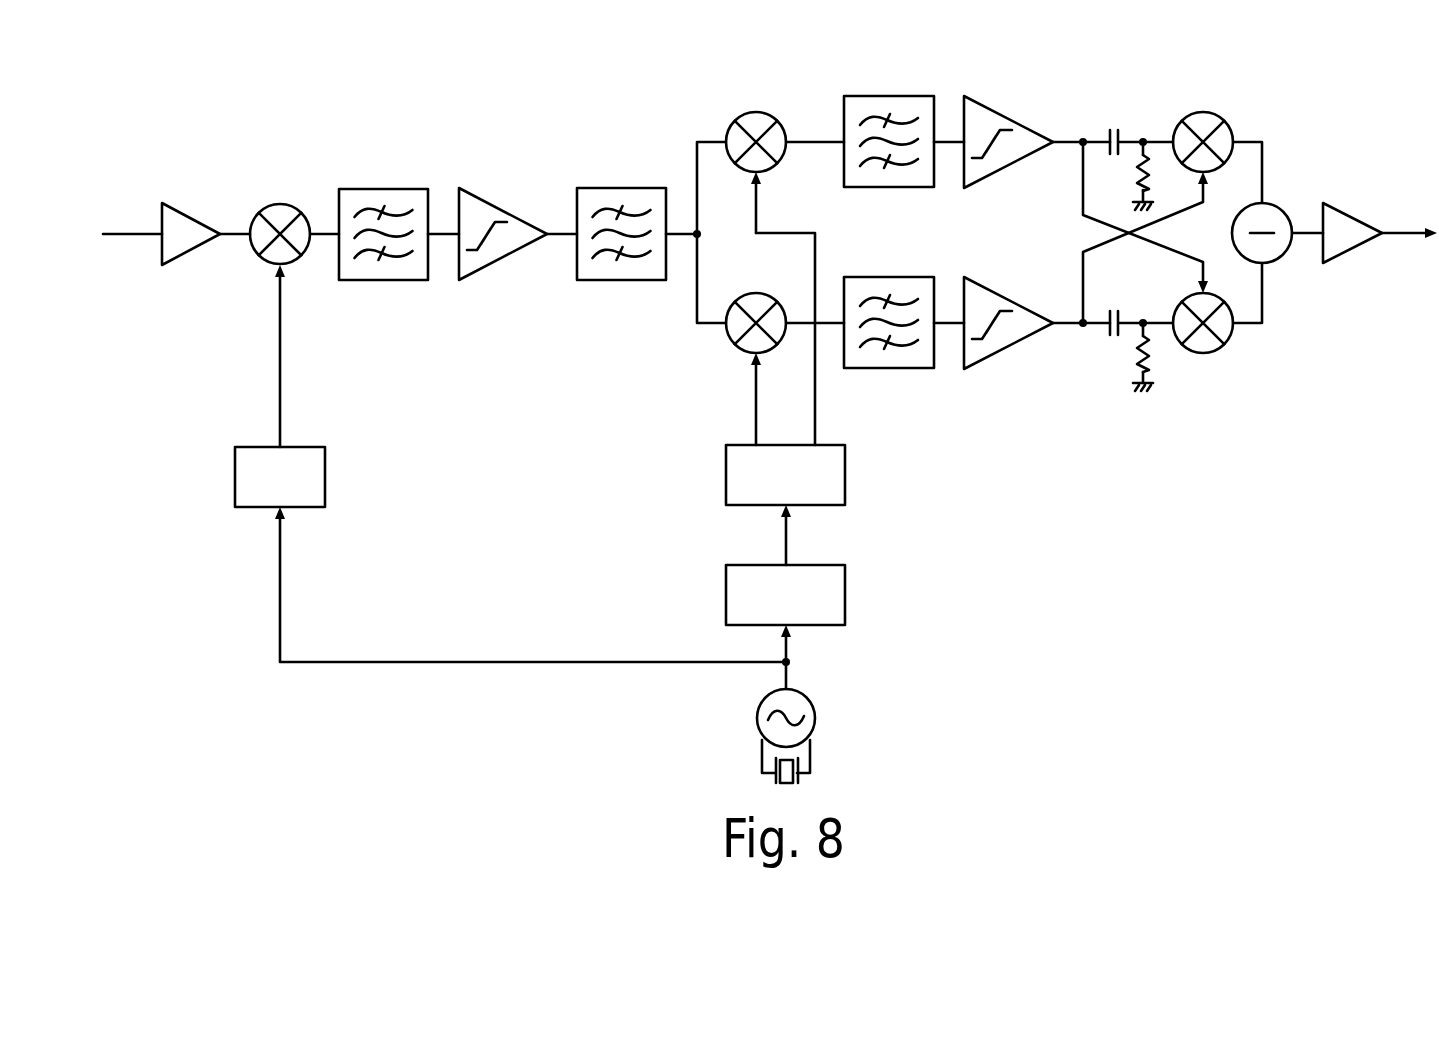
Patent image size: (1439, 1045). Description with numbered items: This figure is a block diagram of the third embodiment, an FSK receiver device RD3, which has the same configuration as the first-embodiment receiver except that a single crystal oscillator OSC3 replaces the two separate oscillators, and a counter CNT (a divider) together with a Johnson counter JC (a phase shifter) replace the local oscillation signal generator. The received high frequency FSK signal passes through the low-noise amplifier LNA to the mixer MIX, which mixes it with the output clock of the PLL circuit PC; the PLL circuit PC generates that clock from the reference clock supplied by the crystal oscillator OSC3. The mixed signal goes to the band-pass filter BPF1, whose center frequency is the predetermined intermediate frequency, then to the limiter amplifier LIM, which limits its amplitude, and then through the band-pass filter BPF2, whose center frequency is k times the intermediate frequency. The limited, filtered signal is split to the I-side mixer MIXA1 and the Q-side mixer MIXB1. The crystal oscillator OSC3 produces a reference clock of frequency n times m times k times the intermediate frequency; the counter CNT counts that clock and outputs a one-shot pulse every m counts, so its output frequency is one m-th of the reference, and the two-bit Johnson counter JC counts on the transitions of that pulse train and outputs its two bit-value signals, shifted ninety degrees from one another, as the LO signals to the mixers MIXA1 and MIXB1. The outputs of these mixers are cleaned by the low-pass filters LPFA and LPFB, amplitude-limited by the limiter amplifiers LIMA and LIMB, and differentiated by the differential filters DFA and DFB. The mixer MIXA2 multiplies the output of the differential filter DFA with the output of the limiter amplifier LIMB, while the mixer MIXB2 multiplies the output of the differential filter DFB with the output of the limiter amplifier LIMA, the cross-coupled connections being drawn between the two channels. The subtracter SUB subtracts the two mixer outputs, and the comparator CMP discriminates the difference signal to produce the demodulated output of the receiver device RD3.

The FSK receiver device RD3 is at (494, 88).
The low-noise amplifier LNA is at (191, 224).
The mixer MIX is at (280, 221).
The band-pass filter BPF1 is at (383, 219).
The limiter amplifier LIM is at (503, 228).
The band-pass filter BPF2 is at (621, 219).
The mixer MIXA1 is at (754, 130).
The mixer MIXB1 is at (754, 309).
The low-pass filter LPFA is at (889, 127).
The low-pass filter LPFB is at (889, 307).
The limiter amplifier LIMA is at (1008, 135).
The limiter amplifier LIMB is at (1008, 316).
The differential filter DFA is at (1140, 157).
The differential filter DFB is at (1140, 337).
The mixer MIXA2 is at (1201, 128).
The mixer MIXB2 is at (1201, 338).
The subtracter SUB is at (1241, 233).
The comparator CMP is at (1352, 221).
The Johnson counter JC is at (799, 489).
The counter CNT is at (805, 609).
The crystal oscillator OSC3 is at (813, 722).
The PLL circuit PC is at (294, 487).